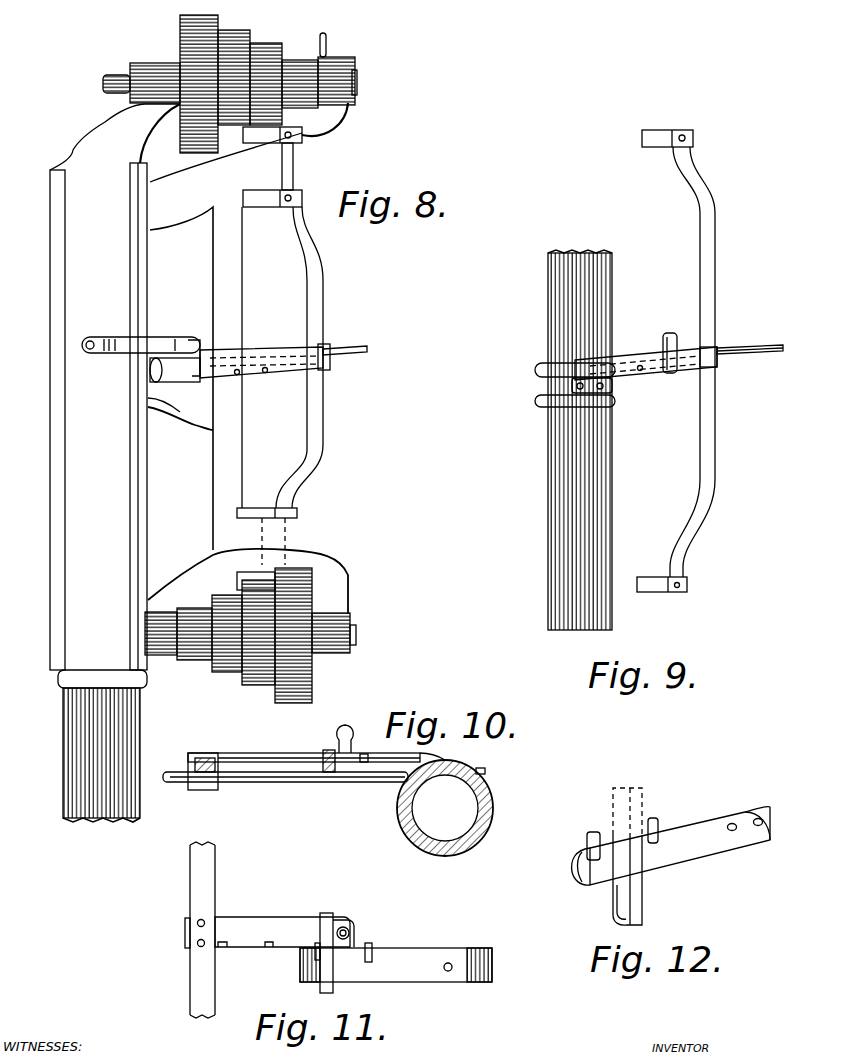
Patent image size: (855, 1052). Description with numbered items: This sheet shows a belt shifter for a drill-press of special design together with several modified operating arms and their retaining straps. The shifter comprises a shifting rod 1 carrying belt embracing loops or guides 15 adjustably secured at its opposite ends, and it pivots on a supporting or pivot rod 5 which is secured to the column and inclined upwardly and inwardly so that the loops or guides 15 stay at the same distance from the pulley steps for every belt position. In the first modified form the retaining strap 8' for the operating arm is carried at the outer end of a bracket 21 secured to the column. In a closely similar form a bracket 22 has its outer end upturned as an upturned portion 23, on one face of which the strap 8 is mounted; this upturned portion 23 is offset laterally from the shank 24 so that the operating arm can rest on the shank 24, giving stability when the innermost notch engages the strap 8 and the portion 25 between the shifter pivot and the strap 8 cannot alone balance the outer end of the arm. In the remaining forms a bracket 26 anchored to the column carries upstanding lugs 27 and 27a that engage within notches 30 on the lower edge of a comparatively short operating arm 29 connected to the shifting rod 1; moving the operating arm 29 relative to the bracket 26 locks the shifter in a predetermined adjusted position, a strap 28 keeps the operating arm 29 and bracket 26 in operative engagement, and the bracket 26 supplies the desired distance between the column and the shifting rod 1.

In FIG. 8, the shifting rod 1 is at (318, 397).
In FIG. 9, the shifting rod 1 is at (710, 458).
In FIG. 10, the shifting rod 1 is at (206, 753).
In FIG. 11, the shifting rod 1 is at (190, 872).
In FIG. 8, the supporting or pivot rod 5 is at (342, 347).
In FIG. 10, the supporting or pivot rod 5 is at (215, 783).
In FIG. 9, the strap 8 is at (646, 348).
In FIG. 8, the retaining strap 8' is at (265, 347).
In FIG. 8, the loops or guides 15 is at (253, 508).
In FIG. 9, the loops or guides 15 is at (668, 131).
In FIG. 8, the bracket 21 is at (160, 340).
In FIG. 9, the bracket 22 is at (640, 398).
In FIG. 9, the upturned portion 23 is at (669, 333).
In FIG. 9, the shank 24 is at (655, 379).
In FIG. 9, the portion 25 is at (703, 348).
In FIG. 10, the bracket 26 is at (300, 763).
In FIG. 11, the bracket 26 is at (400, 960).
In FIG. 12, the bracket 26 is at (686, 824).
In FIG. 10, the upstanding lug 27 is at (325, 750).
In FIG. 11, the upstanding lug 27 is at (322, 955).
In FIG. 12, the upstanding lug 27 is at (594, 832).
In FIG. 10, the upstanding lug 27a is at (364, 763).
In FIG. 11, the upstanding lug 27a is at (371, 943).
In FIG. 12, the upstanding lug 27a is at (653, 818).
In FIG. 11, the strap 28 is at (330, 913).
In FIG. 12, the strap 28 is at (643, 897).
In FIG. 10, the operating arm 29 is at (266, 763).
In FIG. 11, the operating arm 29 is at (262, 918).
In FIG. 11, the notches 30 is at (269, 948).